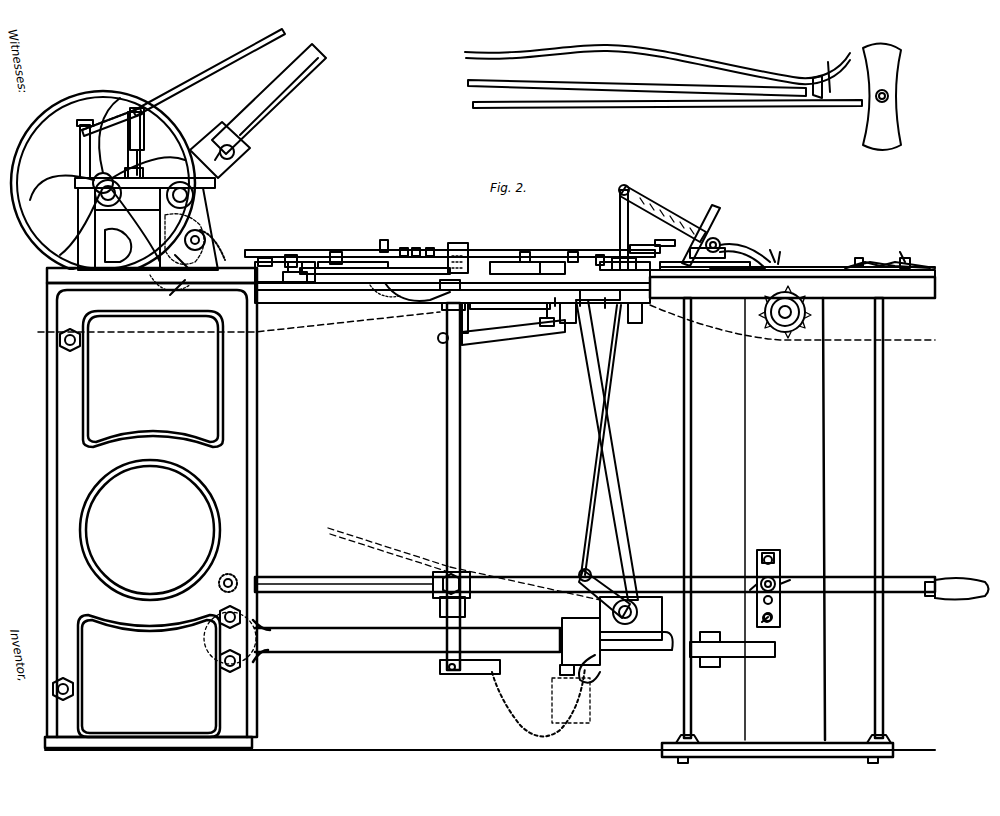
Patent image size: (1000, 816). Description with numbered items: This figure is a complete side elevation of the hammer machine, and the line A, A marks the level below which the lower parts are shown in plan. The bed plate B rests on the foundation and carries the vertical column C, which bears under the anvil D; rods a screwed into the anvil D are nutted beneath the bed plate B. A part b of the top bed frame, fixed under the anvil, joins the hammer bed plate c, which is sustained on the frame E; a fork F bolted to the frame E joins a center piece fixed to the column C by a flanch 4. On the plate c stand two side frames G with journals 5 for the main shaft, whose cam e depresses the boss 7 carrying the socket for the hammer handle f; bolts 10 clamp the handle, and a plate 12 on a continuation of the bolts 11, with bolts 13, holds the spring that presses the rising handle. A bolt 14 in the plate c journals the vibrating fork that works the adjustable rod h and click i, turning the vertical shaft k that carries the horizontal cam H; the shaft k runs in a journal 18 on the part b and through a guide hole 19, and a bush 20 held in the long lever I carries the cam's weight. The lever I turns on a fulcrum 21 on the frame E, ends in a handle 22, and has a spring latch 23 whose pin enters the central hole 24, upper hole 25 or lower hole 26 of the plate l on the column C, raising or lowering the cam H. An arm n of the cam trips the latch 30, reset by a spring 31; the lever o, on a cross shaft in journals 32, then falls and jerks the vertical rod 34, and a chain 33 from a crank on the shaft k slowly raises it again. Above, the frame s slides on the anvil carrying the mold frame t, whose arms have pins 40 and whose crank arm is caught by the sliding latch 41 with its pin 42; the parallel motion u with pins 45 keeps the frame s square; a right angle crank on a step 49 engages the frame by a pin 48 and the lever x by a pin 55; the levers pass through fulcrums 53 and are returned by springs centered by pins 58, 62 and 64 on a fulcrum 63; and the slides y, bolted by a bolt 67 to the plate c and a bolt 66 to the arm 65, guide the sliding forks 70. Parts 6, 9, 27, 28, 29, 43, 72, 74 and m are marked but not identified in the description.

The flanch 4 is at (732, 649).
The journals 5 is at (146, 224).
The cam 6 is at (182, 239).
The boss 7 is at (469, 272).
The link 9 is at (208, 245).
The bolts and nuts 10 is at (210, 158).
The bolts 11 is at (113, 145).
The plate 12 is at (124, 141).
The bolts 13 is at (154, 178).
The bolt 14 is at (170, 290).
The journal 18 is at (474, 318).
The guide hole 19 is at (464, 615).
The bush 20 is at (464, 568).
The fulcrum 21 is at (230, 612).
The handle 22 is at (962, 595).
The spring latch 23 is at (849, 595).
The hole 24 is at (749, 590).
The hole 25 is at (790, 575).
The hole 26 is at (764, 622).
The pin 27 is at (580, 300).
The screw 28 is at (574, 248).
The screw 29 is at (529, 249).
The latch 30 is at (555, 300).
The spring 31 is at (605, 302).
The journals 32 is at (621, 604).
The chain 33 is at (541, 702).
The vertical rod 34 is at (604, 382).
The pin 40 is at (776, 247).
The sliding latch 41 is at (671, 210).
The pin 42 is at (809, 234).
The roller 43 is at (738, 250).
The pins 45 is at (903, 250).
The pin 48 is at (705, 273).
The step 49 is at (645, 242).
The fulcrum 53 is at (605, 253).
The pin 55 is at (787, 251).
The pin 58 is at (406, 244).
The pin 62 is at (435, 244).
The fulcrum 63 is at (295, 281).
The pin 64 is at (417, 293).
The supporting arm 65 is at (457, 293).
The bolt 66 is at (460, 250).
The bolt 67 is at (262, 250).
The sliding fork 70 is at (375, 269).
The spring 72 is at (385, 298).
The screw 74 is at (420, 244).
The line A A is at (478, 328).
The bed plate B is at (777, 751).
The vertical column C is at (778, 478).
The anvil D is at (595, 286).
The frame E is at (490, 509).
The fork F is at (463, 641).
The side frames G is at (103, 183).
The main horizontal cam H is at (515, 255).
The supporting lever I is at (595, 584).
The rods a is at (783, 520).
The top bed frame part b is at (510, 310).
The bed plate of the hammer c is at (450, 484).
The cam e is at (174, 176).
The hammer handle f is at (517, 91).
The adjustable rod h is at (310, 250).
The click i is at (761, 566).
The vertical shaft k is at (445, 486).
The plate l is at (769, 588).
The plate m is at (600, 299).
The arm n is at (540, 414).
The lever o is at (539, 491).
The frame s is at (785, 308).
The mold frame t is at (767, 273).
The parallel motion u is at (885, 272).
The left side lever x is at (658, 438).
The slide y is at (450, 274).